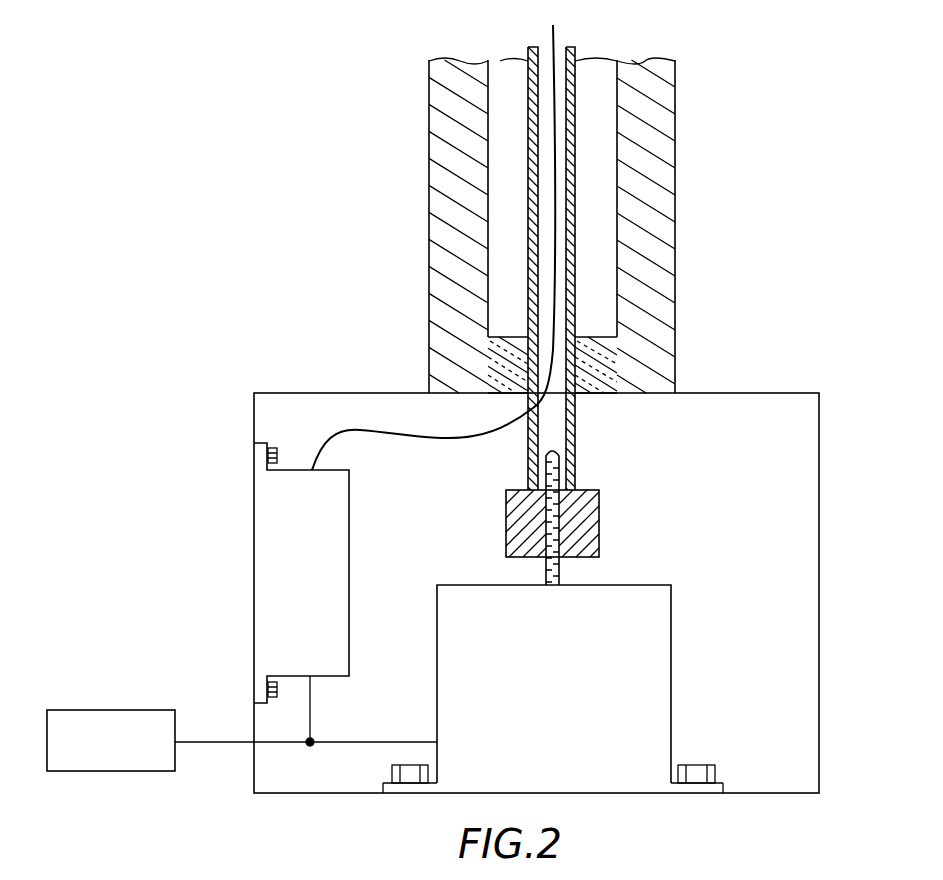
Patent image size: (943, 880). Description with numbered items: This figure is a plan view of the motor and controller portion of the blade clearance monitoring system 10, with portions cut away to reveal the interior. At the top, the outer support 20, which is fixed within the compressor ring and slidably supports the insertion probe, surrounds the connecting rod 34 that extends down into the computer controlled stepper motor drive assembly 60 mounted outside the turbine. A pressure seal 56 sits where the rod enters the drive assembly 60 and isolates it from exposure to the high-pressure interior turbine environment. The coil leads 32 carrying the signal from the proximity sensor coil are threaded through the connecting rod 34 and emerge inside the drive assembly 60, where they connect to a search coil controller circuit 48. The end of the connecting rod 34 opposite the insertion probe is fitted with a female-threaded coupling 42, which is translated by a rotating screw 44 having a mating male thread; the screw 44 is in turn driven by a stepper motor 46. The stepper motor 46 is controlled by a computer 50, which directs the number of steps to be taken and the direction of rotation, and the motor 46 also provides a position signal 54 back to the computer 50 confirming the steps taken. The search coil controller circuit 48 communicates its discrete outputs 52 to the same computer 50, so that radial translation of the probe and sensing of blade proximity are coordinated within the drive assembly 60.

The blade clearance monitoring system 10 is at (362, 279).
The outer support 20 is at (655, 140).
The coil leads 32 is at (437, 443).
The connecting rod 34 is at (576, 52).
The female-threaded coupling 42 is at (600, 520).
The rotating screw 44 is at (562, 570).
The stepper motor 46 is at (560, 692).
The search coil controller circuit 48 is at (305, 581).
The computer 50 is at (128, 708).
The discrete outputs 52 is at (312, 697).
The position signal 54 is at (400, 740).
The pressure seal 56 is at (615, 353).
The drive assembly 60 is at (754, 512).